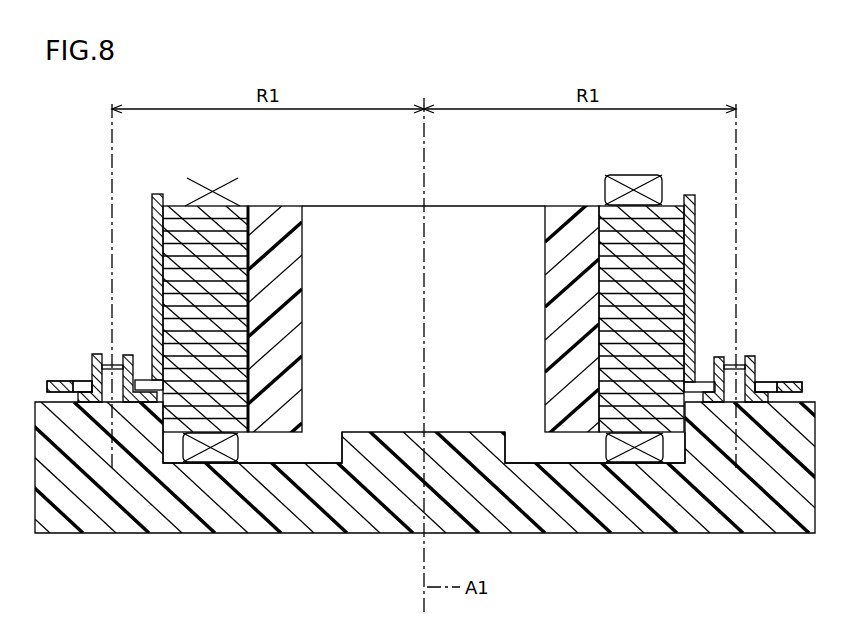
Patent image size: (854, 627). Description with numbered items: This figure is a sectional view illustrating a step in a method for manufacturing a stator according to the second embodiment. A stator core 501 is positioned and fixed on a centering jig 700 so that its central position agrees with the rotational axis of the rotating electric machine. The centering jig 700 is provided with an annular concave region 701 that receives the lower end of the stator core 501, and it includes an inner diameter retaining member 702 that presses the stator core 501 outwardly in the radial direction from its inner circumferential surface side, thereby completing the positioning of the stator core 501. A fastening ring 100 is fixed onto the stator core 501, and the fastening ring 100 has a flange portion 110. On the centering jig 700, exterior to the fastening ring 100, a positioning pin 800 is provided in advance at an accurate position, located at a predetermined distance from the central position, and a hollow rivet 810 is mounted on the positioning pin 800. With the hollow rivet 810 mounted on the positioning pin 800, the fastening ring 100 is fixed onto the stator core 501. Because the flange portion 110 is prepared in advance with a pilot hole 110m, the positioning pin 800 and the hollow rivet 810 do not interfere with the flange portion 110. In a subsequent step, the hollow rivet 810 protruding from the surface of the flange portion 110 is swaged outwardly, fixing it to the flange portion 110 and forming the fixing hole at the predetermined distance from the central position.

The fastening ring 100 is at (152, 218).
The stator core 501 is at (198, 237).
The inner diameter retaining member 702 is at (272, 222).
The centering jig 700 is at (326, 497).
The annular concave region 701 is at (273, 443).
The flange portion 110 is at (52, 381).
The pilot hole 110m is at (83, 387).
The hollow rivet 810 is at (97, 354).
The positioning pin 800 is at (119, 369).